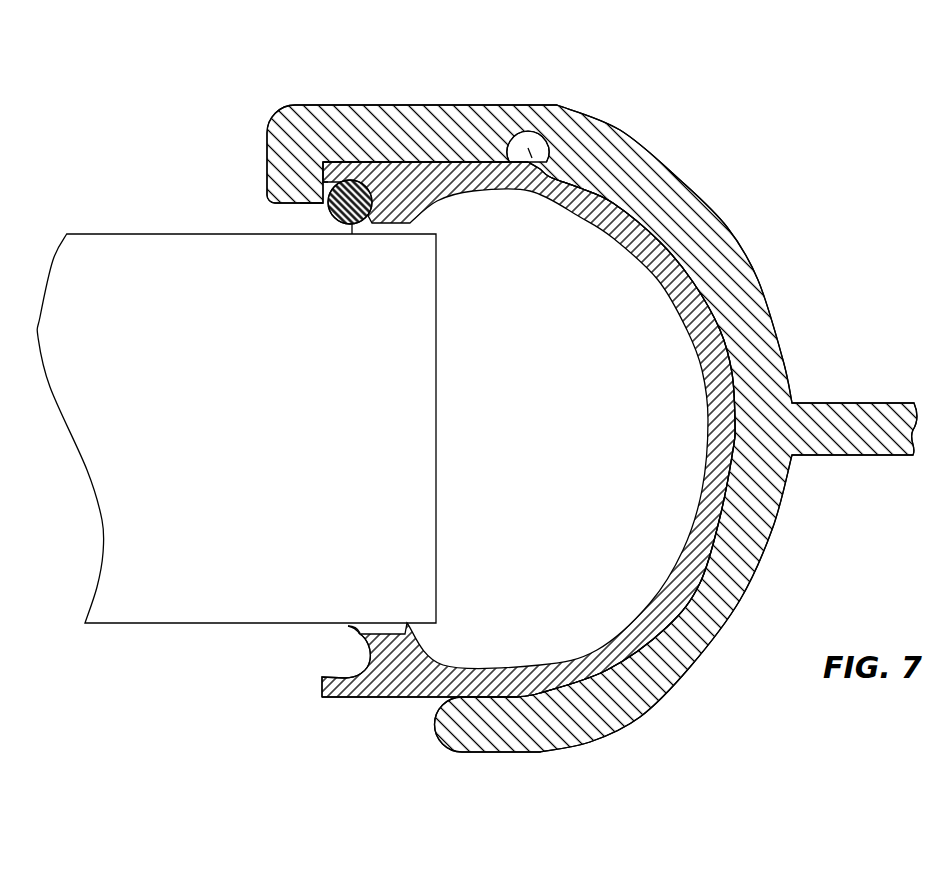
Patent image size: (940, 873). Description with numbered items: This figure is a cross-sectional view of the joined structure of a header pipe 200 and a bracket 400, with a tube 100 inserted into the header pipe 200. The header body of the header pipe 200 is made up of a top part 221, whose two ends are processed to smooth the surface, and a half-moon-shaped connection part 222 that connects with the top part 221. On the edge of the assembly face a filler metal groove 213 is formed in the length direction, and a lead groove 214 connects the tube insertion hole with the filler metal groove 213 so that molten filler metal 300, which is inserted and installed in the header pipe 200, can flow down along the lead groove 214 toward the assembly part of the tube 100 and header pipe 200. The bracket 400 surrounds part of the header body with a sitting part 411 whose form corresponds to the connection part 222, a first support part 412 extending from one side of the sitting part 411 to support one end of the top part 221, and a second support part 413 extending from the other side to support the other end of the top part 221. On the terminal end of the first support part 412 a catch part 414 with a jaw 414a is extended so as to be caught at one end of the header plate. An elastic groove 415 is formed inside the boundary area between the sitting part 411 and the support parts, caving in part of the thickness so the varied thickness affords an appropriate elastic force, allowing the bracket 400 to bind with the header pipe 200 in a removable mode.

The tube 100 is at (153, 233).
The header pipe 200 is at (551, 405).
The filler metal groove 213 is at (356, 662).
The lead groove 214 is at (348, 626).
The top part 221 is at (378, 161).
The connection part 222 is at (714, 502).
The filler metal 300 is at (333, 210).
The bracket 400 is at (548, 427).
The sitting part 411 is at (728, 578).
The first support part 412 is at (452, 132).
The second support part 413 is at (495, 753).
The catch part 414 is at (265, 157).
The jaw 414a is at (325, 204).
The elastic groove 415 is at (560, 174).